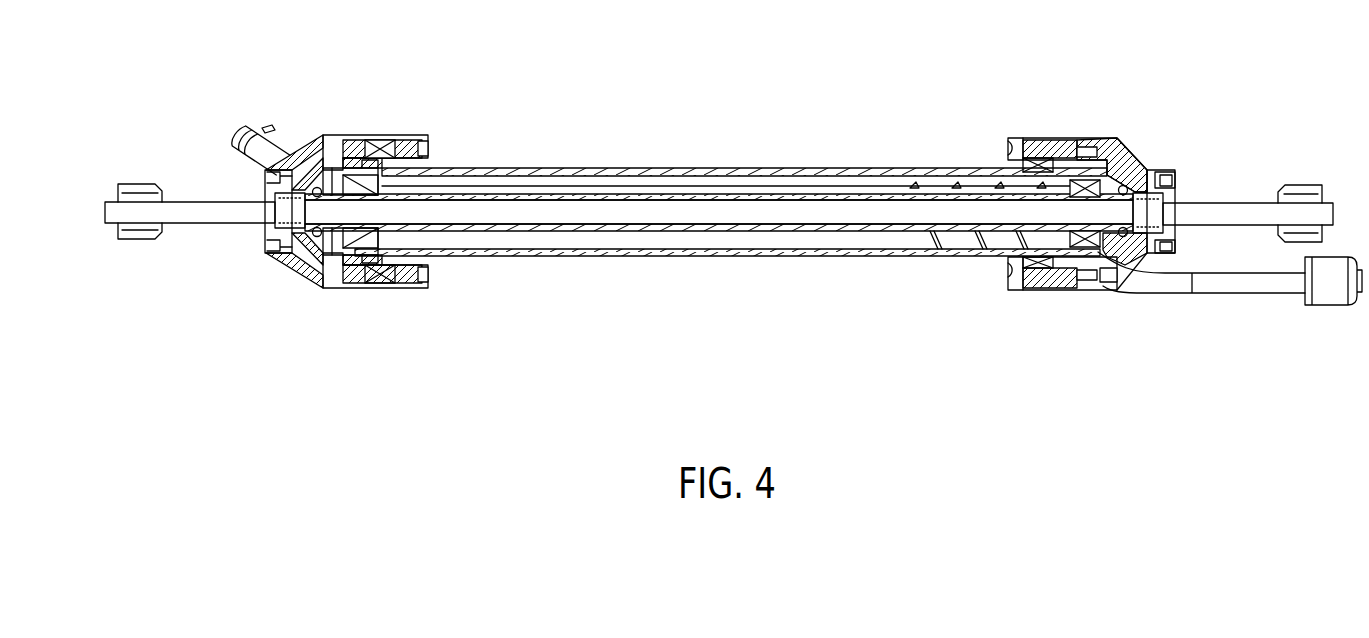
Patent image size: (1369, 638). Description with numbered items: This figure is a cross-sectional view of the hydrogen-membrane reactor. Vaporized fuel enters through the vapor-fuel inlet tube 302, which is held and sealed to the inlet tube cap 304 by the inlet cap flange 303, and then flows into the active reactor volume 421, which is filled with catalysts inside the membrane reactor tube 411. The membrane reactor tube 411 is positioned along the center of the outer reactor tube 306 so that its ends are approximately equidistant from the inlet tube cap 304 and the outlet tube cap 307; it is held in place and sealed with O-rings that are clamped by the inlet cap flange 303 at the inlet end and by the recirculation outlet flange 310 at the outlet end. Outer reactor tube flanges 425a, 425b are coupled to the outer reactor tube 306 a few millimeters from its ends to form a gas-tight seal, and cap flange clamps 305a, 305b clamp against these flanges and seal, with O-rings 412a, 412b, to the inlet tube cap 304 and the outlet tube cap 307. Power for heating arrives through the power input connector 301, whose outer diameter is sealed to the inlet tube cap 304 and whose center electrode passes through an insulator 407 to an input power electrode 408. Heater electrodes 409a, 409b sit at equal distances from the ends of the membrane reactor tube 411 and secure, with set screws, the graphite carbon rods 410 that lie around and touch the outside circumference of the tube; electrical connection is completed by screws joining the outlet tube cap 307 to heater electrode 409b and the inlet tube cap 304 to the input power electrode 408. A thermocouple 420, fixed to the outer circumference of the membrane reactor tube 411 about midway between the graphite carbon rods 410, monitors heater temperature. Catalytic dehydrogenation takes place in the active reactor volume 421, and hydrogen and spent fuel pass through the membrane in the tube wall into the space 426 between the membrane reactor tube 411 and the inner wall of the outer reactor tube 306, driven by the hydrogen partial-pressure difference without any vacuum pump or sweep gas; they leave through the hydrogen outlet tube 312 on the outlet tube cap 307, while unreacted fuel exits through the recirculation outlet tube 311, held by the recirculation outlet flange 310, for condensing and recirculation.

The power input connector 301 is at (245, 128).
The vapor-fuel inlet tube 302 is at (187, 202).
The inlet cap flange 303 is at (288, 252).
The inlet tube cap 304 is at (313, 272).
The cap flange clamp 305a is at (404, 270).
The cap flange clamp 305b is at (1036, 139).
The outer reactor tube 306 is at (463, 253).
The outlet tube cap 307 is at (1102, 139).
The recirculation outlet flange 310 is at (1168, 195).
The recirculation outlet tube 311 is at (1297, 212).
The hydrogen outlet tube 312 is at (1218, 283).
The insulator 407 is at (345, 140).
The input power electrode 408 is at (372, 168).
The heater electrode 409a is at (422, 145).
The heater electrode 409b is at (1107, 290).
The graphite carbon rods 410 is at (478, 190).
The membrane reactor tube 411 is at (498, 196).
The O-ring 412a is at (373, 264).
The O-ring 412b is at (1057, 269).
The thermocouple 420 is at (978, 248).
The active reactor volume 421 is at (636, 210).
The outer reactor tube flange 425a is at (385, 270).
The outer reactor tube flange 425b is at (1062, 268).
The space 426 is at (563, 237).